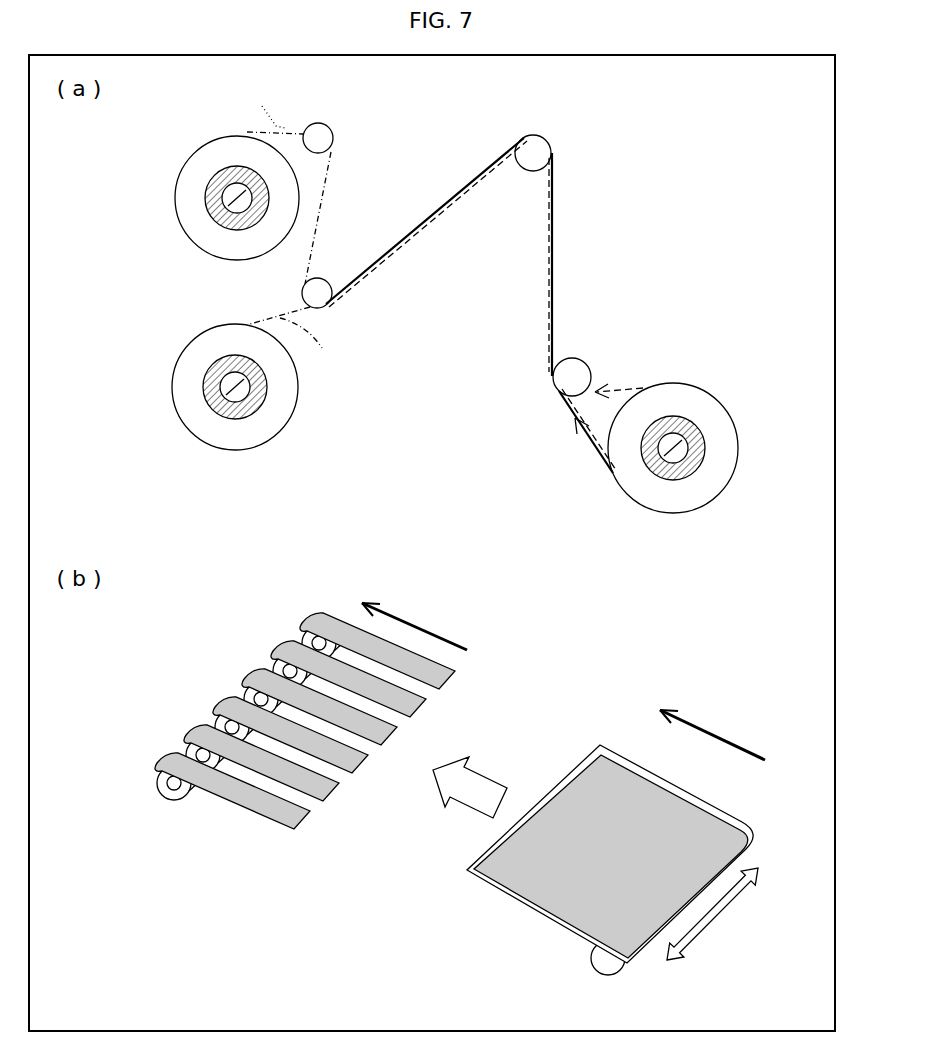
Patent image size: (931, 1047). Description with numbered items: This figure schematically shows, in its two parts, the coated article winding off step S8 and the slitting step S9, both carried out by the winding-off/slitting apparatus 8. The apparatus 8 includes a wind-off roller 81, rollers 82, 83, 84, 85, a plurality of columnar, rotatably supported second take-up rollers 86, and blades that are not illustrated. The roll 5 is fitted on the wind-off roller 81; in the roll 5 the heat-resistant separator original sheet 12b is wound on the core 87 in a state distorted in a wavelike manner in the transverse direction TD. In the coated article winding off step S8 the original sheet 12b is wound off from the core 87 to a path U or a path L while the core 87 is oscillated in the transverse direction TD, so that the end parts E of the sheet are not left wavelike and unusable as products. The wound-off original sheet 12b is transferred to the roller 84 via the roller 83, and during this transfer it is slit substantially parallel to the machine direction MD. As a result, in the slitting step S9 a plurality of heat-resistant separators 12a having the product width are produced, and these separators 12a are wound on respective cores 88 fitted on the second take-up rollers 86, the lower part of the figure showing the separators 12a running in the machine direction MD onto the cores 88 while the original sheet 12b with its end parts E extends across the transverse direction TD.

The winding-off/slitting apparatus 8 is at (712, 114).
The roll 5 is at (735, 402).
The heat-resistant separators 12a is at (319, 837).
The heat-resistant separator original sheet 12b is at (553, 245).
The wind-off roller 81 is at (651, 463).
The roller 82 is at (570, 360).
The roller 83 is at (551, 150).
The roller 84 is at (319, 308).
The roller 85 is at (316, 123).
The second take-up rollers 86 is at (224, 209).
The core 87 is at (702, 464).
The cores 88 is at (206, 195).
The coated article winding off step S8 is at (689, 302).
The slitting step S9 is at (369, 199).
The machine direction MD is at (410, 620).
The transverse direction TD is at (715, 920).
The end parts E is at (700, 796).
The path U is at (619, 380).
The path L is at (580, 446).